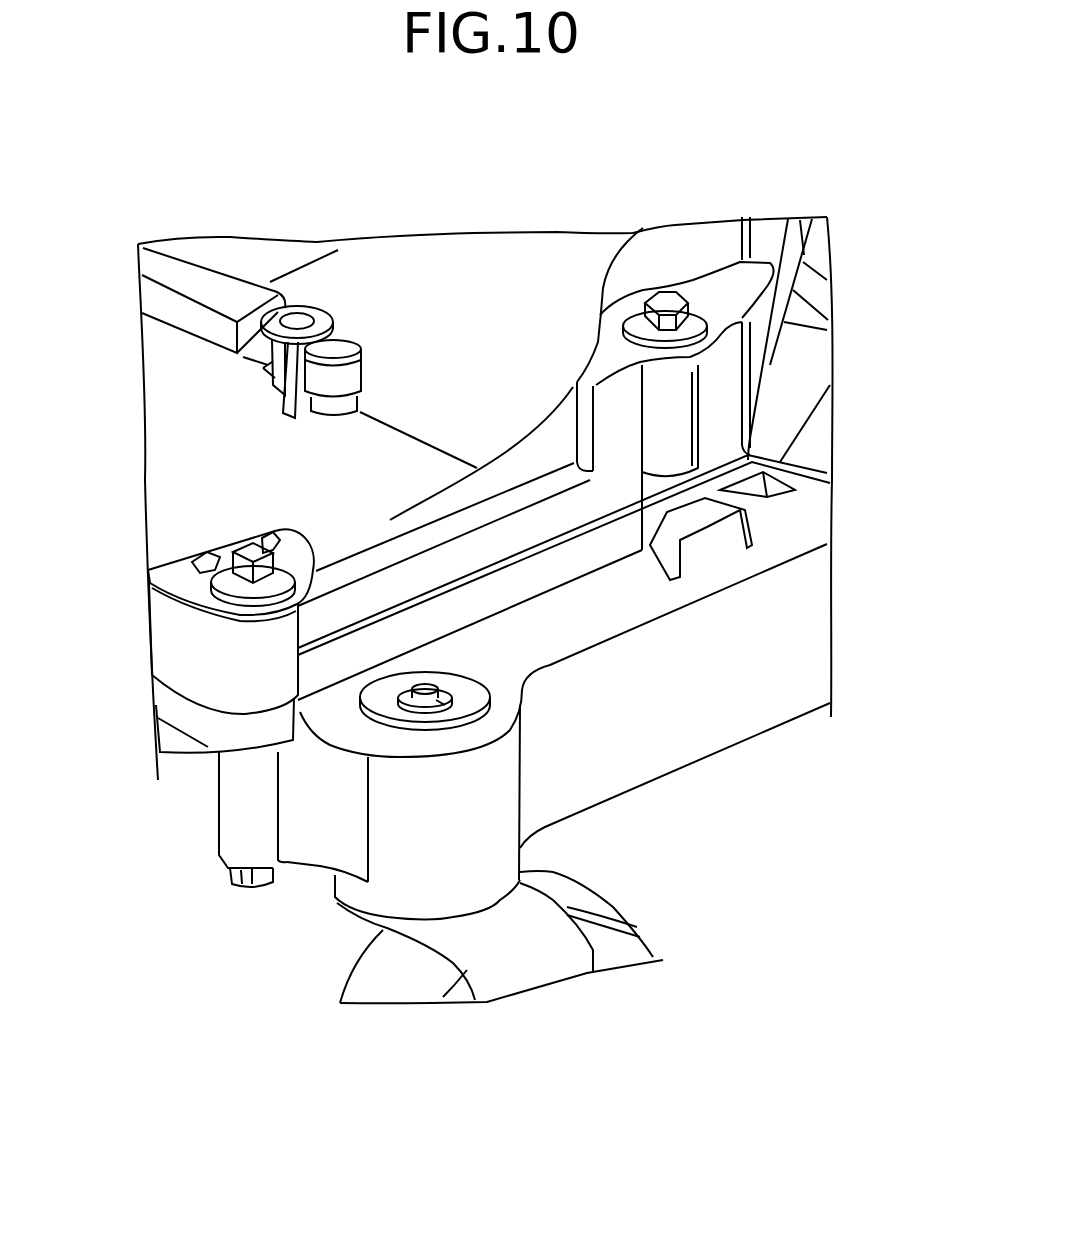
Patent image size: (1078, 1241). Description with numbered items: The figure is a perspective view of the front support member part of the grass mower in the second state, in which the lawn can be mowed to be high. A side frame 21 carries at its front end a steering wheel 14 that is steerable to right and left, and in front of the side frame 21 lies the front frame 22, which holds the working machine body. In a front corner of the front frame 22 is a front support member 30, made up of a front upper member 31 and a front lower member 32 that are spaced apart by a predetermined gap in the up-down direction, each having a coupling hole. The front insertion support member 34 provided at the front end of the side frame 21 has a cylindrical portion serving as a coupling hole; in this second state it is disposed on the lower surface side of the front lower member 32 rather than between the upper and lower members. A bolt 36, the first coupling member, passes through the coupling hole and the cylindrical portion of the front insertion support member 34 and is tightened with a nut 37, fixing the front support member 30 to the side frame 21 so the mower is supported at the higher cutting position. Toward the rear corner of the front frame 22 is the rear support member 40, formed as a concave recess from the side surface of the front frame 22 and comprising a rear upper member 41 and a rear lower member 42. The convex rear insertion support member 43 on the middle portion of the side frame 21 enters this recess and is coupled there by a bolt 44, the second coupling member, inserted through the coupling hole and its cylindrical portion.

The steering wheel 14 is at (610, 930).
The side frame 21 is at (740, 718).
The front frame 22 is at (487, 265).
The front support member 30 is at (222, 645).
The front upper member 31 is at (182, 578).
The front lower member 32 is at (240, 730).
The front insertion support member 34 is at (240, 793).
The bolt 36 is at (247, 550).
The nut 37 is at (242, 880).
The rear support member 40 is at (673, 418).
The rear upper member 41 is at (713, 303).
The rear lower member 42 is at (722, 445).
The rear insertion support member 43 is at (787, 500).
The bolt 44 is at (668, 296).